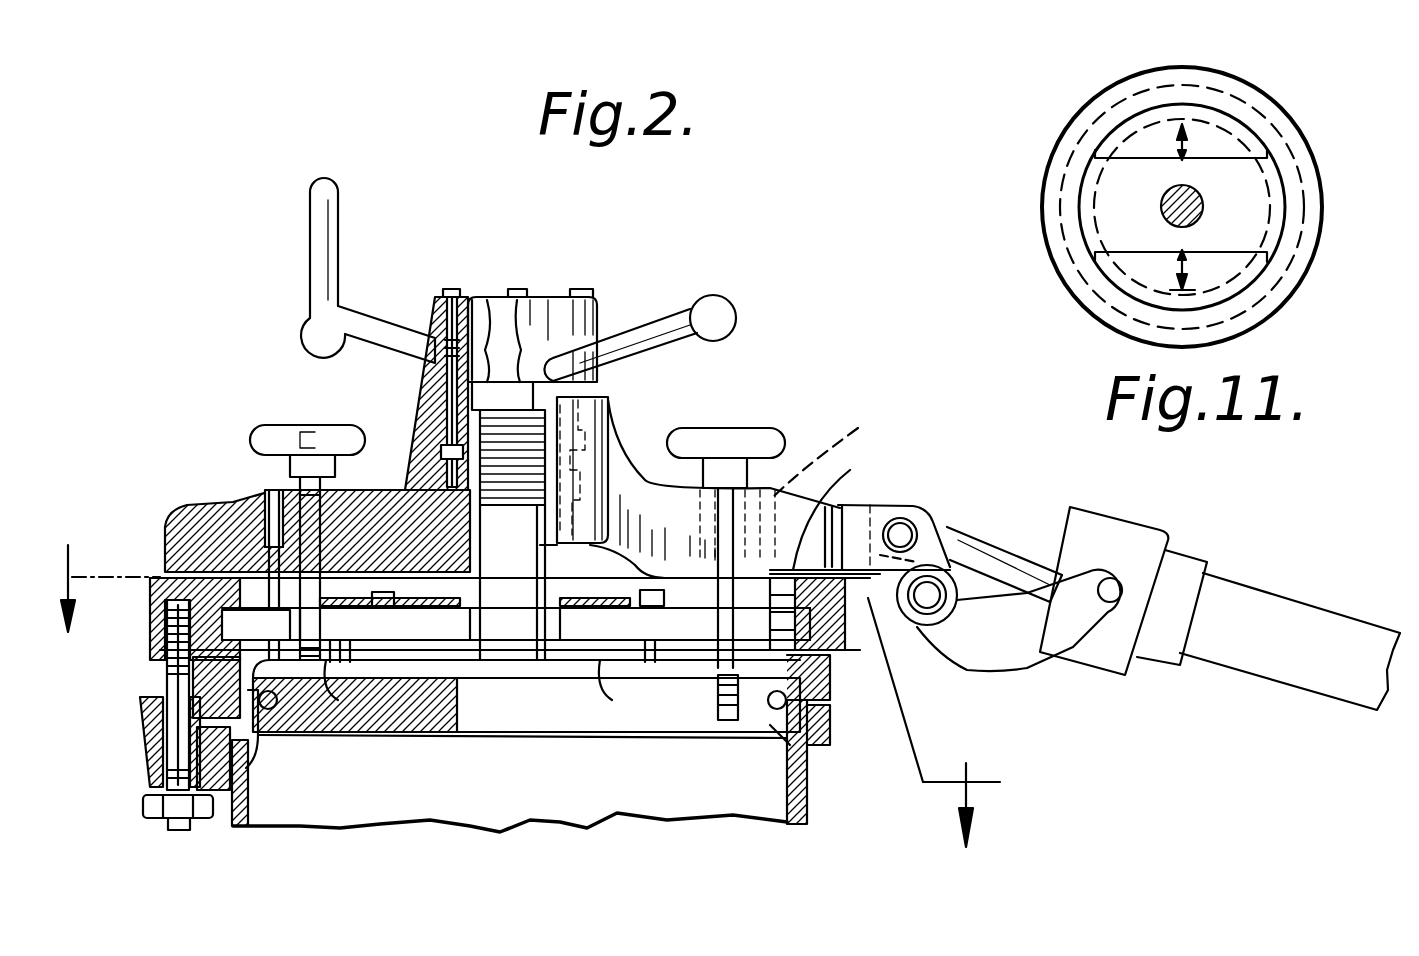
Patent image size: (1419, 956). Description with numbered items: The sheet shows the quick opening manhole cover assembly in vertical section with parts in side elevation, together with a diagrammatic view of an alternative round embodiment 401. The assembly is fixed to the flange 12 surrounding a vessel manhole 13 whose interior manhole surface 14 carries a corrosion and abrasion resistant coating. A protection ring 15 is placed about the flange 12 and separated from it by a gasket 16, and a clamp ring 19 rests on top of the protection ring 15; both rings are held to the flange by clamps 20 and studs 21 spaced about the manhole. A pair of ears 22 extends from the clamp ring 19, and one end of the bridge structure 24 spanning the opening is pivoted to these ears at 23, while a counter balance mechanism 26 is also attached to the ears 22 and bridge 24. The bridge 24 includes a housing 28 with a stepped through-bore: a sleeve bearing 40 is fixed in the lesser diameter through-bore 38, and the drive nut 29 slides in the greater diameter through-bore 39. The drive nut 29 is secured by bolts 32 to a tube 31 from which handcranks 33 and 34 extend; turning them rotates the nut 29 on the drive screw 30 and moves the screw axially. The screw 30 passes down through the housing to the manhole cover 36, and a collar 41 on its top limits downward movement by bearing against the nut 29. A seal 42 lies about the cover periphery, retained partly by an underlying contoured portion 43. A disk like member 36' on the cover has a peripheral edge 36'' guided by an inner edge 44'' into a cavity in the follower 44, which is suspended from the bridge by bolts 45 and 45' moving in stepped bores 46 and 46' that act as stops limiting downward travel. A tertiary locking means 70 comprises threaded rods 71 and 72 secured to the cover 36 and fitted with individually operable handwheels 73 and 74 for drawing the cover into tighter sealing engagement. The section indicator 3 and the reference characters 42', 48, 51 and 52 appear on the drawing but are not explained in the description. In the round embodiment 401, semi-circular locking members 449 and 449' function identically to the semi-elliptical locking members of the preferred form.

In FIG. 2, the flange 12 is at (283, 760).
In FIG. 2, the vessel manhole 13 is at (640, 798).
In FIG. 2, the interior manhole surface 14 is at (785, 800).
In FIG. 2, the protection ring 15 is at (215, 680).
In FIG. 2, the gasket 16 is at (140, 715).
In FIG. 2, the clamp ring 19 is at (150, 598).
In FIG. 11, the clamp ring 19 is at (1315, 237).
In FIG. 2, the clamps 20 is at (145, 768).
In FIG. 2, the studs 21 is at (180, 832).
In FIG. 2, the pair of ears 22 is at (1010, 680).
In FIG. 2, the pivot 23 is at (935, 612).
In FIG. 2, the bridge structure 24 is at (640, 470).
In FIG. 2, the counter balance mechanism 26 is at (1272, 582).
In FIG. 2, the housing 28 is at (610, 410).
In FIG. 2, the drive nut 29 is at (420, 420).
In FIG. 2, the drive screw 30 is at (520, 330).
In FIG. 11, the drive screw 30 is at (1225, 202).
In FIG. 2, the tube 31 is at (430, 370).
In FIG. 2, the bolts 32 is at (448, 415).
In FIG. 2, the handcrank 33 is at (322, 224).
In FIG. 2, the handcrank 34 is at (736, 318).
In FIG. 2, the manhole cover 36 is at (526, 711).
In FIG. 2, the disk like member 36' is at (425, 738).
In FIG. 2, the peripheral edge 36'' is at (518, 705).
In FIG. 2, the lesser diameter through-bore 38 is at (495, 545).
In FIG. 2, the greater diameter through-bore 39 is at (438, 448).
In FIG. 2, the sleeve bearing 40 is at (420, 488).
In FIG. 2, the collar 41 is at (487, 300).
In FIG. 2, the seal 42 is at (522, 746).
In FIG. 2, the pin 42' is at (721, 736).
In FIG. 2, the portion of manhole cover 43 is at (772, 730).
In FIG. 2, the follower means 44 is at (505, 732).
In FIG. 2, the inner edge 44'' is at (256, 623).
In FIG. 2, the bolt 45 is at (502, 551).
In FIG. 2, the bolt 45' is at (860, 546).
In FIG. 2, the stepped bore 46 is at (231, 543).
In FIG. 2, the stepped bore 46' is at (846, 451).
In FIG. 2, the slide 48 is at (597, 600).
In FIG. 2, the plate 51 is at (645, 634).
In FIG. 2, the plate 52 is at (390, 626).
In FIG. 2, the tertiary locking means 70 is at (775, 268).
In FIG. 2, the threaded rod 71 is at (305, 580).
In FIG. 2, the threaded rod 72 is at (725, 548).
In FIG. 2, the handwheel 73 is at (270, 430).
In FIG. 2, the handwheel 74 is at (775, 440).
In FIG. 2, the section line 3 is at (531, 695).
In FIG. 11, the alternative round embodiment 401 is at (1050, 136).
In FIG. 11, the semi-circular locking member 449 is at (1196, 157).
In FIG. 11, the semi-circular locking member 449' is at (1052, 305).